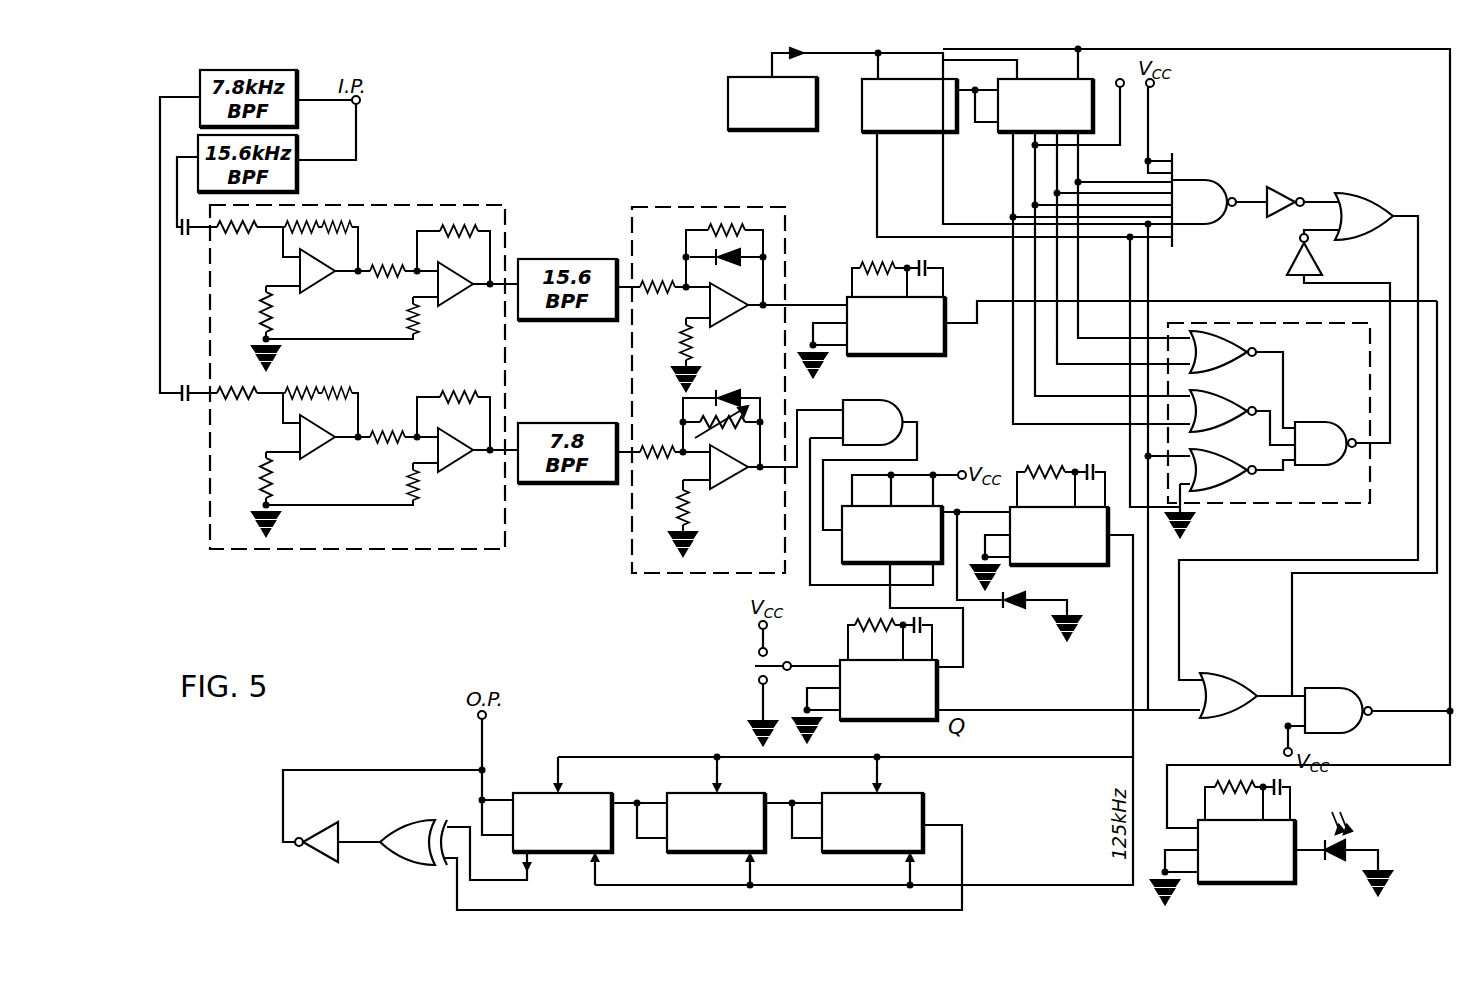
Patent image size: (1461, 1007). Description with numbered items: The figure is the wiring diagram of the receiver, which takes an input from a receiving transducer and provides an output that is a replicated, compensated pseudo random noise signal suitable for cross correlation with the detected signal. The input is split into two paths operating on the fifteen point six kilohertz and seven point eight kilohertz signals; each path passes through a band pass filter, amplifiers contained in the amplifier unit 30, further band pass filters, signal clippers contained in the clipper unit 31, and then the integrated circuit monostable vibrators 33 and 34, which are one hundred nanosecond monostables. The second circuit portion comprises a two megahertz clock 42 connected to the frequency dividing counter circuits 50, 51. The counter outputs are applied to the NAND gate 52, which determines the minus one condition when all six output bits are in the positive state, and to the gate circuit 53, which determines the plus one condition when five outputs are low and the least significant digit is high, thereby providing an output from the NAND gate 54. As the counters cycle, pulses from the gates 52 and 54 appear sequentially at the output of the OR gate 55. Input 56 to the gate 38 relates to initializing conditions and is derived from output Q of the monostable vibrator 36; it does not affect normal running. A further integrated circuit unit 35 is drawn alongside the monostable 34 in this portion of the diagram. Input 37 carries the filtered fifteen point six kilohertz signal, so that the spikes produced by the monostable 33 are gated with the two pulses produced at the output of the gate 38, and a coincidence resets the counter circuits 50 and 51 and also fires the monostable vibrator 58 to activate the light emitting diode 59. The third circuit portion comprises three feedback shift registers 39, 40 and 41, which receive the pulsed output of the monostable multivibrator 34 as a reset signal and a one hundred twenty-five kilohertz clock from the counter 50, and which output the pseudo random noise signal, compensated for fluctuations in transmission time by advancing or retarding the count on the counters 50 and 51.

The amplifier unit 30 is at (484, 205).
The signal clipper unit 31 is at (758, 207).
The monostable vibrator 33 is at (945, 345).
The monostable multivibrator 34 is at (1045, 549).
The flip-flop 35 is at (878, 548).
The monostable vibrator 36 is at (940, 686).
The input 37 is at (1340, 688).
The gate 38 is at (1250, 676).
The feedback shift register 39 is at (604, 800).
The feedback shift register 40 is at (760, 800).
The feedback shift register 41 is at (917, 800).
The 2 MHz clock 42 is at (728, 100).
The frequency dividing counter circuit 50 is at (866, 138).
The frequency dividing counter circuit 51 is at (1002, 138).
The NAND gate 52 is at (1230, 182).
The gate circuit 53 is at (1360, 503).
The NAND gate 54 is at (1312, 468).
The OR gate 55 is at (1382, 196).
The input 56 is at (1032, 712).
The monostable vibrator 58 is at (1270, 883).
The light emitting diode 59 is at (1345, 830).